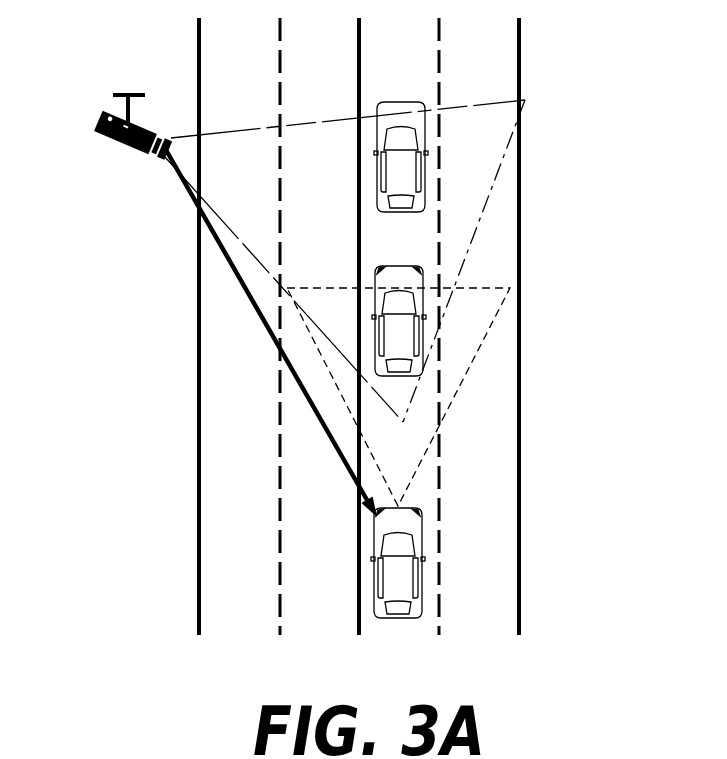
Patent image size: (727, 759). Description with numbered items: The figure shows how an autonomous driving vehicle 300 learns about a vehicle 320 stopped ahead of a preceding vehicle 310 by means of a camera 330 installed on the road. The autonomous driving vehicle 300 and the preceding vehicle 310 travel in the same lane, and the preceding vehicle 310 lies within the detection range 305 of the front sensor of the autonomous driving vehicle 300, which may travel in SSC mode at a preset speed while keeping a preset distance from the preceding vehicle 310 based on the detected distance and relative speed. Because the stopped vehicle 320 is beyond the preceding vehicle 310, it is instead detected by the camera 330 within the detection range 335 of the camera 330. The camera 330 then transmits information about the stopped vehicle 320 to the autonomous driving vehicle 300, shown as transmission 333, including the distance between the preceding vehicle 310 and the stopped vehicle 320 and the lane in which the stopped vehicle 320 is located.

The autonomous driving vehicle 300 is at (423, 553).
The detection range 305 is at (331, 287).
The preceding vehicle 310 is at (421, 279).
The stopped vehicle 320 is at (383, 177).
The camera 330 is at (128, 153).
The transmission of information 333 is at (247, 290).
The detection range of the camera 335 is at (455, 104).